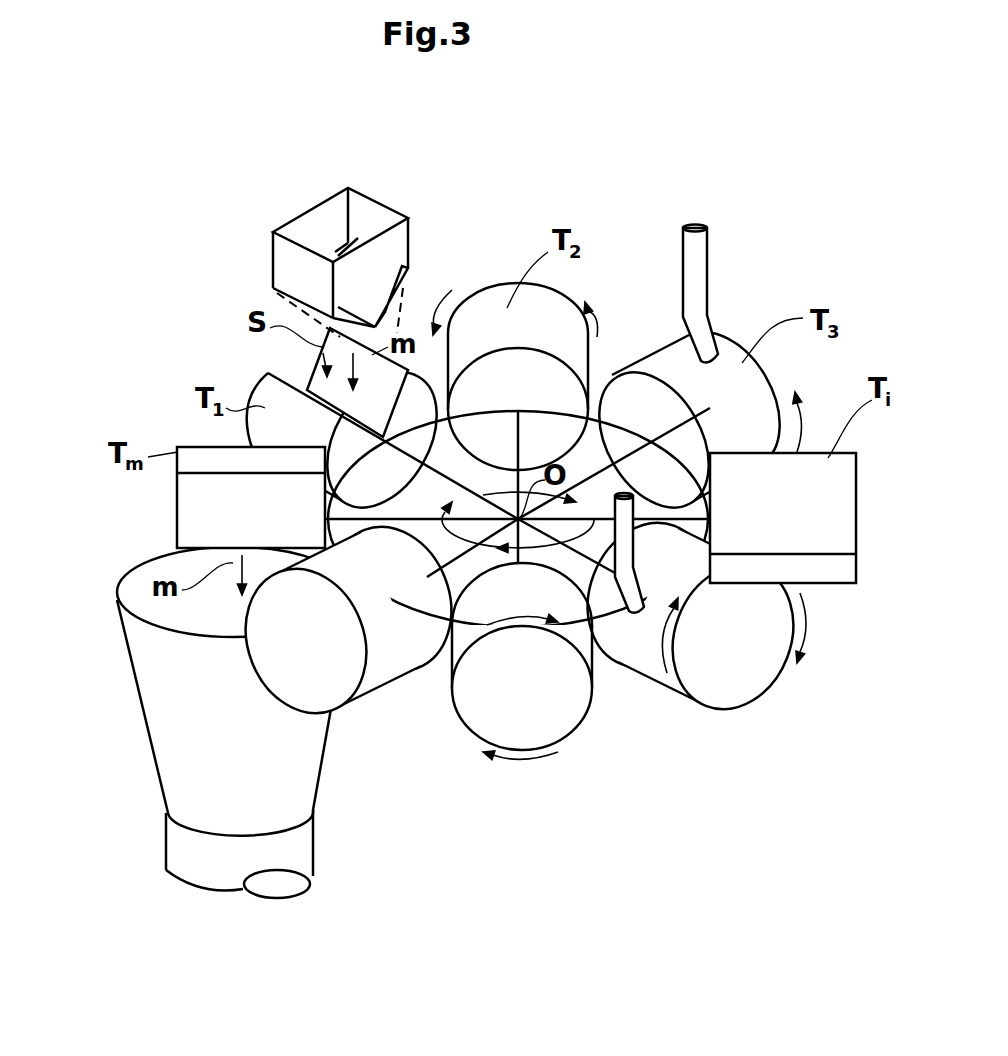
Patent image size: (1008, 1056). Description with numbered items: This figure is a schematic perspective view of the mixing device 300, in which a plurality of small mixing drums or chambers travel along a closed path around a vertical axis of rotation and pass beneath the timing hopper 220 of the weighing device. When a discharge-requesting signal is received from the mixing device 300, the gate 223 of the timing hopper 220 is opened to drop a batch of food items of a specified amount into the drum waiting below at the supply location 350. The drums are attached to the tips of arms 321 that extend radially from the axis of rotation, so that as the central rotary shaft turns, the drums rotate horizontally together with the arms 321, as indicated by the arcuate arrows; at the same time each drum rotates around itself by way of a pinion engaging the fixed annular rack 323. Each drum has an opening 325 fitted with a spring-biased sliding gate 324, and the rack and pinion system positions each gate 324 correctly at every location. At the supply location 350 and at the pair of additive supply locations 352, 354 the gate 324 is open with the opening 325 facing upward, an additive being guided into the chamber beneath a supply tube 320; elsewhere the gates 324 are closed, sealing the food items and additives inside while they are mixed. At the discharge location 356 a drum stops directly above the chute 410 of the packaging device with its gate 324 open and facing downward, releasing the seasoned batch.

The timing hopper 220 is at (383, 200).
The gate 223 is at (413, 297).
The mixing device 300 is at (206, 216).
The supply tube 320 is at (710, 247).
The arm 321 is at (480, 515).
The fixed annular rack 323 is at (614, 410).
The sliding gate 324 is at (200, 504).
The opening 325 is at (288, 378).
The supply location 350 is at (231, 288).
The additive supply location 352 is at (752, 261).
The additive supply location 354 is at (640, 761).
The discharge location 356 is at (91, 560).
The chute 410 is at (297, 768).